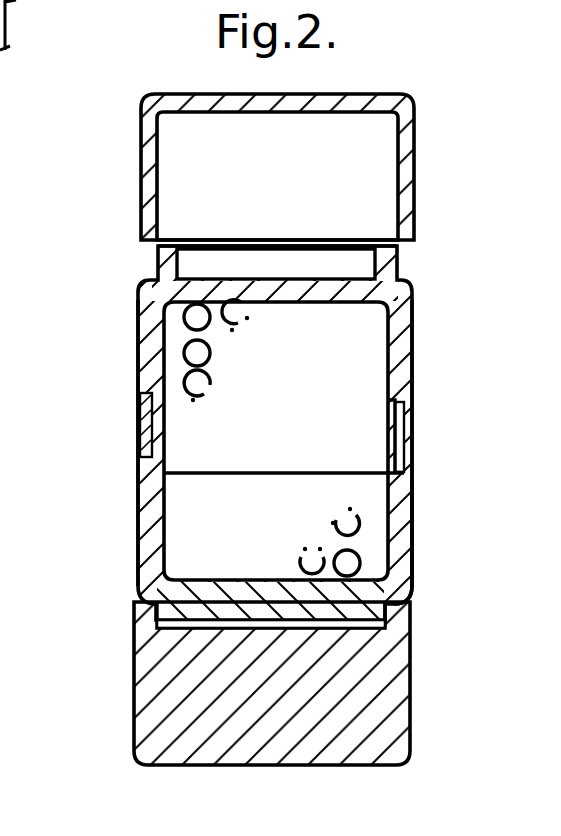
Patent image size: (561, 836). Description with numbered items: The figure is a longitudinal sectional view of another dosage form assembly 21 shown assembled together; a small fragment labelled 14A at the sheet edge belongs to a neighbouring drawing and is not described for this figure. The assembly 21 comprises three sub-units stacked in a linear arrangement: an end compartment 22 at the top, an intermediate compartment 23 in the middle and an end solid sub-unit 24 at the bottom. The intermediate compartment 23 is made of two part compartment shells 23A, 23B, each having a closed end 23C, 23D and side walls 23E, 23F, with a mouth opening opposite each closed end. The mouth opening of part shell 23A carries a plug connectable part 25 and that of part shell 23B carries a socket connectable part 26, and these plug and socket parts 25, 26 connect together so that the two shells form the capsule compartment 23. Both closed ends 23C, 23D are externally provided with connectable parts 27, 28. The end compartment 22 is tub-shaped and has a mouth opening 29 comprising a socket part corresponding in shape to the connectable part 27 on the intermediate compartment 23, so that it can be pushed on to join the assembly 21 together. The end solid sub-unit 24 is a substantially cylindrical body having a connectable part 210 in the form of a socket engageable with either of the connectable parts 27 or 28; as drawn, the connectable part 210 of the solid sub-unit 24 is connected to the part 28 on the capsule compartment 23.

The adjacent figure element 14A is at (0, 62).
The dosage form assembly 21 is at (264, 400).
The end compartment 22 is at (249, 167).
The intermediate compartment 23 is at (174, 487).
The part compartment shell 23A is at (439, 440).
The part compartment shell 23B is at (411, 570).
The closed end 23C is at (346, 278).
The closed end 23D is at (350, 560).
The side wall 23E is at (137, 358).
The side wall 23F is at (137, 552).
The end solid sub-unit 24 is at (269, 683).
The plug connectable part 25 is at (392, 435).
The socket connectable part 26 is at (406, 458).
The connectable part 27 is at (272, 235).
The connectable part 28 is at (386, 622).
The mouth opening 29 is at (224, 232).
The connectable part 210 is at (133, 612).